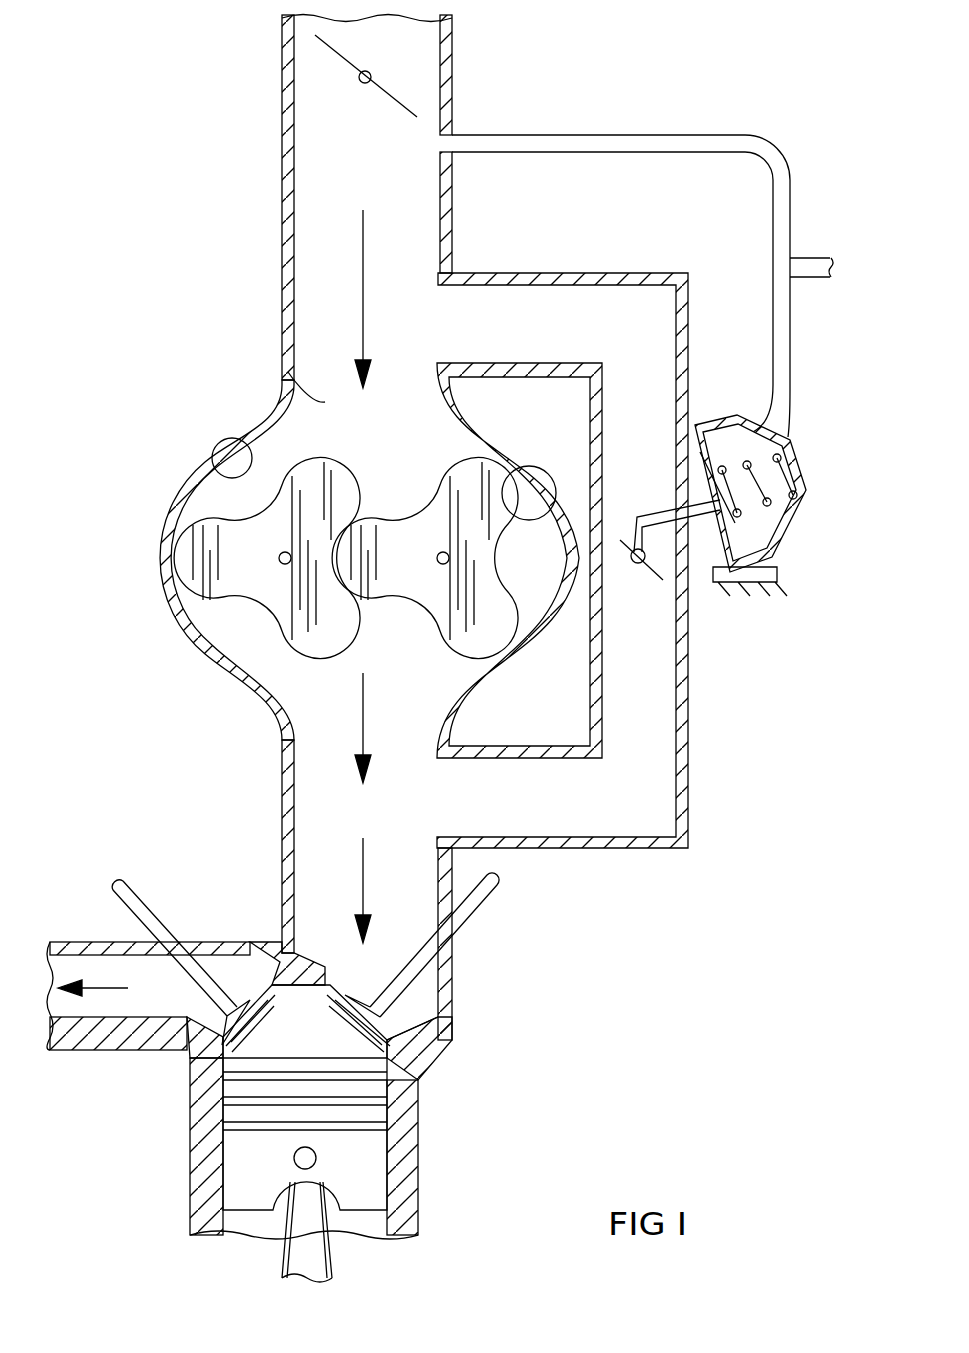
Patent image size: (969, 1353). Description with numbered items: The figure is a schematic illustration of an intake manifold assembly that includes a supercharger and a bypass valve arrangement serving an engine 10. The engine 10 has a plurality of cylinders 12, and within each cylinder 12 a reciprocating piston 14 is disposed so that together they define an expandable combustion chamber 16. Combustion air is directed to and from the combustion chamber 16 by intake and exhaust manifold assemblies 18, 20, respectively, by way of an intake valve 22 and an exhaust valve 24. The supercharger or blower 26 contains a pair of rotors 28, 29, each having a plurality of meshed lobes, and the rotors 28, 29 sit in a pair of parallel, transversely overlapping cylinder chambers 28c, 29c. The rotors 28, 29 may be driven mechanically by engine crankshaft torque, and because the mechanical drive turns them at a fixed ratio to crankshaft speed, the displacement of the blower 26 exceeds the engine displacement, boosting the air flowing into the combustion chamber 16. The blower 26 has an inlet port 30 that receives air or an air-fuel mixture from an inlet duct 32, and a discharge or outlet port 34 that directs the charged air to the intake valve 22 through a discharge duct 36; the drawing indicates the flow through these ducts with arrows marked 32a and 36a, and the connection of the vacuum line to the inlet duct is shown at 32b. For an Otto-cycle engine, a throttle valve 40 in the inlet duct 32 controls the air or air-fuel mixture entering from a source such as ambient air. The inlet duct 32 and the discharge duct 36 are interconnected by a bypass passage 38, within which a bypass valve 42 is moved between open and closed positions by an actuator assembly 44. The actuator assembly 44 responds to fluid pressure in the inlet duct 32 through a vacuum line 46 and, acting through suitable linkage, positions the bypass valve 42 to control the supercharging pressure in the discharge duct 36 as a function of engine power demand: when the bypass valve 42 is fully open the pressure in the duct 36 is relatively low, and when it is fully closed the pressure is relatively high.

The engine 10 is at (157, 1092).
The cylinder 12 is at (385, 1140).
The reciprocating piston 14 is at (365, 1178).
The combustion chamber 16 is at (318, 1038).
The intake manifold assembly 18 is at (197, 715).
The exhaust manifold assembly 20 is at (82, 942).
The intake valve 22 is at (475, 908).
The exhaust valve 24 is at (157, 893).
The blower 26 is at (156, 518).
The rotor 28 is at (225, 648).
The cylinder chamber 28c is at (248, 455).
The rotor 29 is at (422, 603).
The cylinder chamber 29c is at (504, 468).
The inlet port 30 is at (288, 372).
The inlet duct 32 is at (348, 130).
The intake air flow 32a is at (468, 325).
The branch opening 32b is at (438, 143).
The discharge port 34 is at (322, 707).
The discharge duct 36 is at (315, 882).
The discharge air flow 36a is at (470, 792).
The bypass passage 38 is at (650, 680).
The throttle valve 40 is at (330, 56).
The bypass valve 42 is at (650, 570).
The actuator assembly 44 is at (807, 460).
The vacuum line 46 is at (673, 138).